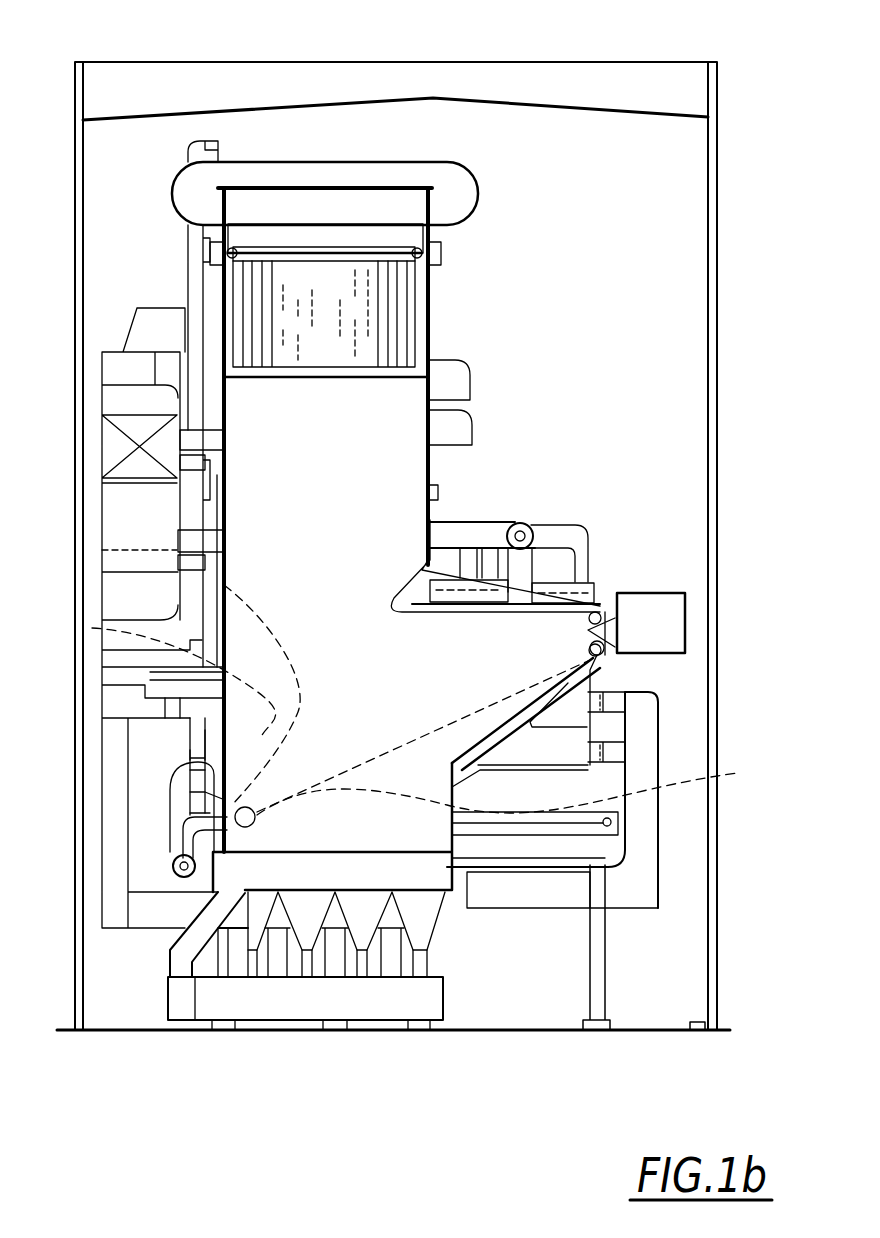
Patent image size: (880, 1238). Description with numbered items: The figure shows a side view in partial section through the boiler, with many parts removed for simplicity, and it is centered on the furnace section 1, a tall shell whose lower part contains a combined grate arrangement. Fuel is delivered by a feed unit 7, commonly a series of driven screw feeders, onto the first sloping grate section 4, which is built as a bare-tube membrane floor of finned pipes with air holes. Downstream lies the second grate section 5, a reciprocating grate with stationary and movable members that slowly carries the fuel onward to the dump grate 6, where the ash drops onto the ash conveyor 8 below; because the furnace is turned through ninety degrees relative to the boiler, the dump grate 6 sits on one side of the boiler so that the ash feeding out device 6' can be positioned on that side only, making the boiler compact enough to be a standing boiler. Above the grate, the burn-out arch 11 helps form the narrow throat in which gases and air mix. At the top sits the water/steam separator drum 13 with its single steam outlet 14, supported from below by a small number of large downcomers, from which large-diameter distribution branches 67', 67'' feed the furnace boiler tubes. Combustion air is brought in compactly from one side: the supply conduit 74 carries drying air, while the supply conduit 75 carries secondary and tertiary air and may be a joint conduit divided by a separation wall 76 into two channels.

The furnace section 1 is at (407, 462).
The first sloping grate section 4 is at (547, 682).
The second grate section 5 is at (511, 787).
The dump grate 6 is at (144, 842).
The ash feeding out device 6' is at (140, 934).
The feed unit 7 is at (673, 612).
The ash conveyor 8 is at (373, 1005).
The burn-out arch 11 is at (92, 628).
The water/steam separator drum 13 is at (462, 178).
The steam outlet 14 is at (206, 148).
The distribution branch 67' is at (603, 513).
The distribution branch 67'' is at (119, 807).
The supply conduit for drying air 74 is at (648, 748).
The supply conduit for secondary and tertiary air 75 is at (522, 570).
The separation wall 76 is at (490, 567).